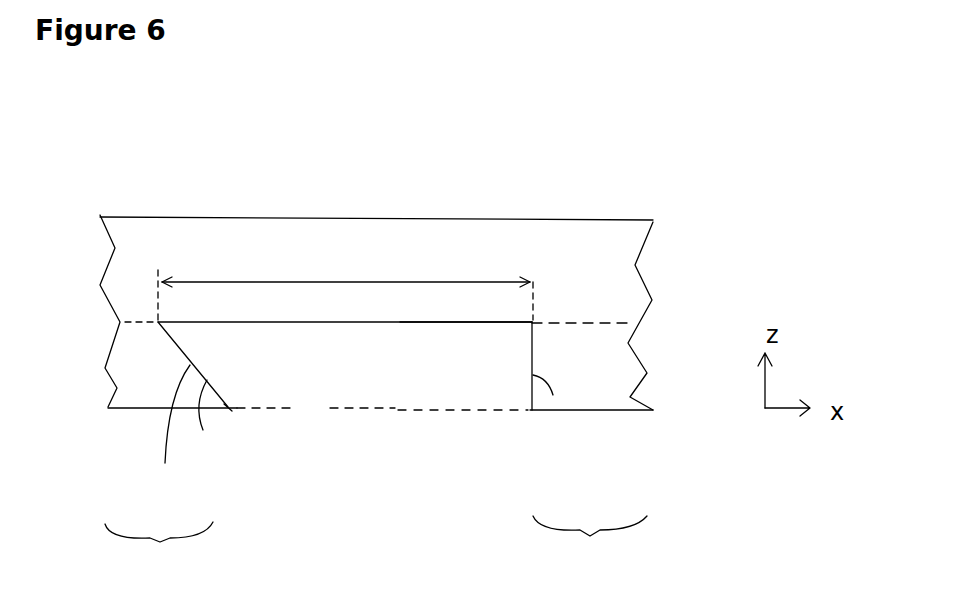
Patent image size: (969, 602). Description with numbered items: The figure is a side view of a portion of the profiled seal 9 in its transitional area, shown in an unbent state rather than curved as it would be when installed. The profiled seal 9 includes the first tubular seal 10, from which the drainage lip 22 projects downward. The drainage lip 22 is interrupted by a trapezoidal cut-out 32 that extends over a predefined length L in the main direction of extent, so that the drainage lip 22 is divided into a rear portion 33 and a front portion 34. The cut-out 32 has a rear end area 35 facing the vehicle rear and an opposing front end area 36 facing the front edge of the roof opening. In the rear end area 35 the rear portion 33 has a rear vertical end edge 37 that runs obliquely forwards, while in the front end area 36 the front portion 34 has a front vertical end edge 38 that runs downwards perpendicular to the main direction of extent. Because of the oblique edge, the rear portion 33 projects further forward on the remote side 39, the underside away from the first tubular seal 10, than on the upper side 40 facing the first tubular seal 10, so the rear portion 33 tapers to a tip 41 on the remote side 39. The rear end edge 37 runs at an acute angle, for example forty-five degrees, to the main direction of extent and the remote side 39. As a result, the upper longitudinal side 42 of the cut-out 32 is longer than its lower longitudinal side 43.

The profiled seal 9 is at (695, 173).
The first tubular seal 10 is at (535, 237).
The drainage lip 22 is at (133, 398).
The cut-out 32 is at (378, 388).
The rear portion 33 is at (159, 555).
The front portion 34 is at (590, 552).
The rear end area 35 is at (222, 363).
The front end area 36 is at (512, 362).
The rear vertical end edge 37 is at (203, 430).
The front vertical end edge 38 is at (553, 395).
The remote side 39 is at (225, 414).
The upper side 40 is at (278, 322).
The tip 41 is at (222, 400).
The upper longitudinal side 42 is at (420, 322).
The lower longitudinal side 43 is at (405, 412).